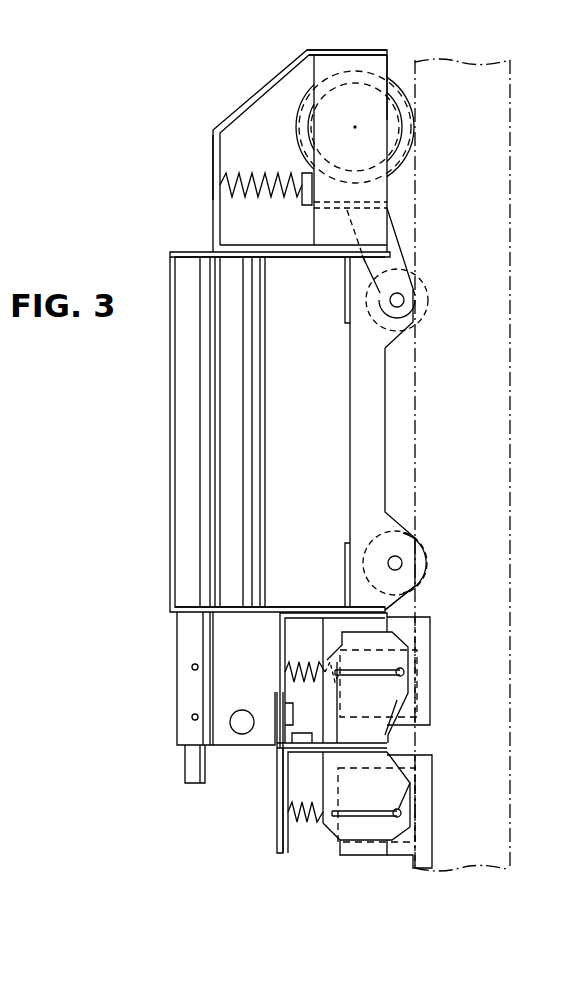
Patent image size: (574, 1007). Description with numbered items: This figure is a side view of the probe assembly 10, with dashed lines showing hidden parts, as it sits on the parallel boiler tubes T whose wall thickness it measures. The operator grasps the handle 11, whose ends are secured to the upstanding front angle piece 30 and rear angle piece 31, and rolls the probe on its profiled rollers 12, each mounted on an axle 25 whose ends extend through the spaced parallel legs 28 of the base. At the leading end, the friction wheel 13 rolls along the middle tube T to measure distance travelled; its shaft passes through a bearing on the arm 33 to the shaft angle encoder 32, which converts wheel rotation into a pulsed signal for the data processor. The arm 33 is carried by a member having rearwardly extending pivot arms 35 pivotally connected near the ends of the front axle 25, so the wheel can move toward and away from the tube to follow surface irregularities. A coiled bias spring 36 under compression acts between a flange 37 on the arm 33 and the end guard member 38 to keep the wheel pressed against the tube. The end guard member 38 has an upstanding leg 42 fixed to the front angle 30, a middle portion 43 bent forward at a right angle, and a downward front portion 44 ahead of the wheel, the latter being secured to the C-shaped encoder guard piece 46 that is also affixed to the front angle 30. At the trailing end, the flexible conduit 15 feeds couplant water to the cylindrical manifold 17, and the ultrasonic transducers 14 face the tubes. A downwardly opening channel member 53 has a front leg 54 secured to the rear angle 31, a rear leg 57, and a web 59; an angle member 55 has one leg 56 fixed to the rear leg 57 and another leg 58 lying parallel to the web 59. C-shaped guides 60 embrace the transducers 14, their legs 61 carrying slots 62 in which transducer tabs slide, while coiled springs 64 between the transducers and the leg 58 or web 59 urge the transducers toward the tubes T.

The probe assembly 10 is at (200, 215).
The handle 11 is at (170, 403).
The profiled roller 12 is at (415, 307).
The friction wheel 13 is at (410, 127).
The ultrasonic transducer 14 is at (423, 698).
The flexible conduit 15 is at (185, 769).
The cylindrical header or manifold 17 is at (176, 673).
The axle 25 is at (404, 300).
The legs of base 28 is at (393, 342).
The front angle piece 30 is at (311, 605).
The rear angle piece 31 is at (320, 256).
The shaft angle encoder 32 is at (393, 146).
The arm 33 is at (308, 208).
The pivot arm 35 is at (398, 262).
The coiled bias spring 36 is at (267, 175).
The flange 37 is at (306, 172).
The end guard member 38 is at (254, 93).
The upstanding leg 42 is at (256, 244).
The middle portion 43 is at (212, 148).
The front portion 44 is at (343, 50).
The encoder guard piece 46 is at (382, 68).
The channel member 53 is at (285, 668).
The front leg of channel 54 is at (323, 618).
The angle member 55 is at (277, 838).
The leg of angle member 56 is at (315, 752).
The rear leg of channel 57 is at (362, 740).
The leg of angle member 58 is at (277, 802).
The web of channel 59 is at (278, 630).
The guide 60 is at (398, 653).
The leg of guide 61 is at (397, 700).
The slot 62 is at (404, 675).
The coiled spring 64 is at (288, 668).
The tube T is at (516, 351).